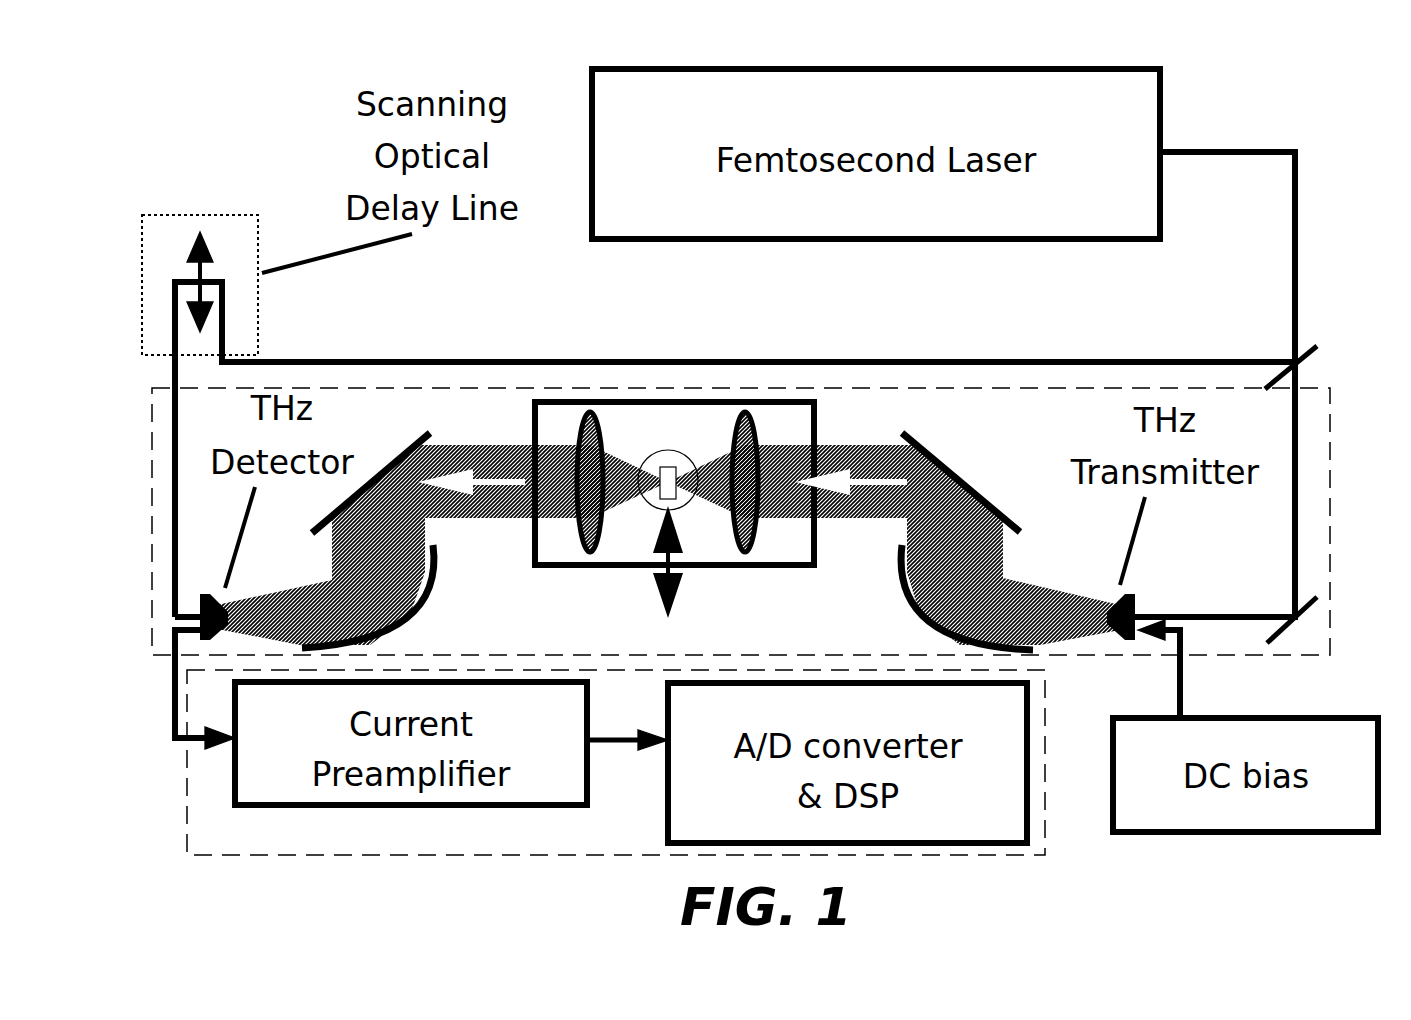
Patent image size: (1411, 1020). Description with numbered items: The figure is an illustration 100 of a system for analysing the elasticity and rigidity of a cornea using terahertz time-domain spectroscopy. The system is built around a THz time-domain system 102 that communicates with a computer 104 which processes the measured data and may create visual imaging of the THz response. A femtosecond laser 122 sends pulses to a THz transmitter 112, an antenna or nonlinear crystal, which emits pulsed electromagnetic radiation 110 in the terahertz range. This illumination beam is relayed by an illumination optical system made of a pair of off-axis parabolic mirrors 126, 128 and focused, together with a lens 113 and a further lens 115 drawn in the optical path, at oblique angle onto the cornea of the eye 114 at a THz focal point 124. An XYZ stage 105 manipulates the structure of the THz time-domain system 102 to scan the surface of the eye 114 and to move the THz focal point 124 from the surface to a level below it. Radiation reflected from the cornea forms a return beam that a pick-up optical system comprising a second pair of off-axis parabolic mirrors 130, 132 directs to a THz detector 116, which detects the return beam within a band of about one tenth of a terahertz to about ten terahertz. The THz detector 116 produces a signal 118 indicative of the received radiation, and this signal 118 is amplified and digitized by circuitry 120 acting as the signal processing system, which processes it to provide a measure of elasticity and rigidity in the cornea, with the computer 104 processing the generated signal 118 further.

The system 100 is at (1228, 903).
The THz time-domain system 102 is at (1330, 445).
The computer 104 is at (1030, 742).
The XYZ stage 105 is at (644, 557).
The electromagnetic radiation 110 is at (1015, 580).
The THz transmitter 112 is at (1130, 592).
The lens 113 is at (745, 412).
The eye 114 is at (668, 462).
The lens 115 is at (590, 412).
The THz detector 116 is at (207, 593).
The signal 118 is at (172, 698).
The circuitry 120 is at (520, 856).
The femtosecond laser 122 is at (932, 68).
The THz focal point 124 is at (690, 520).
The off-axis parabolic mirror 126 is at (958, 474).
The off-axis parabolic mirror 128 is at (925, 607).
The off-axis parabolic mirror 130 is at (412, 440).
The off-axis parabolic mirror 132 is at (415, 607).